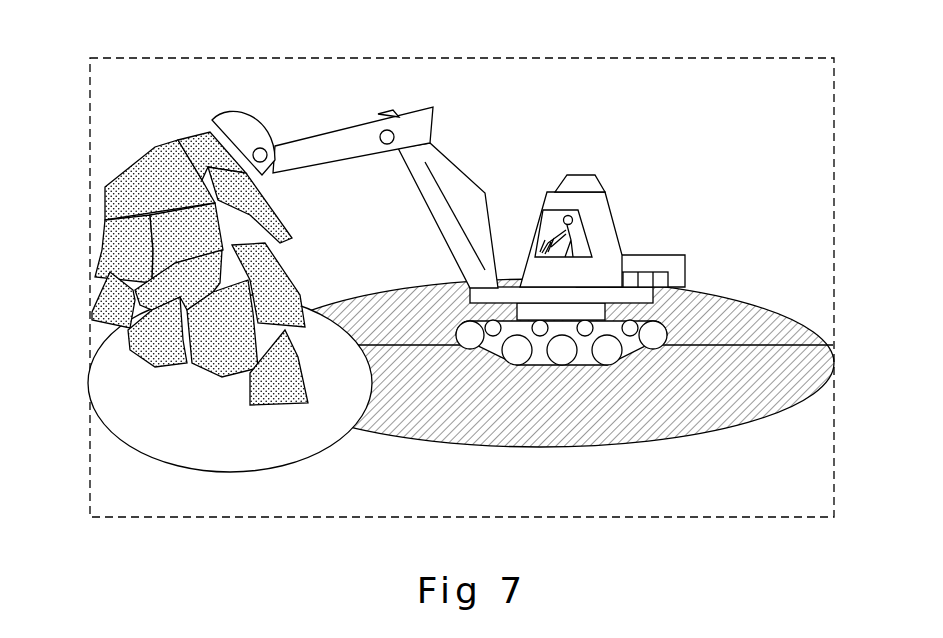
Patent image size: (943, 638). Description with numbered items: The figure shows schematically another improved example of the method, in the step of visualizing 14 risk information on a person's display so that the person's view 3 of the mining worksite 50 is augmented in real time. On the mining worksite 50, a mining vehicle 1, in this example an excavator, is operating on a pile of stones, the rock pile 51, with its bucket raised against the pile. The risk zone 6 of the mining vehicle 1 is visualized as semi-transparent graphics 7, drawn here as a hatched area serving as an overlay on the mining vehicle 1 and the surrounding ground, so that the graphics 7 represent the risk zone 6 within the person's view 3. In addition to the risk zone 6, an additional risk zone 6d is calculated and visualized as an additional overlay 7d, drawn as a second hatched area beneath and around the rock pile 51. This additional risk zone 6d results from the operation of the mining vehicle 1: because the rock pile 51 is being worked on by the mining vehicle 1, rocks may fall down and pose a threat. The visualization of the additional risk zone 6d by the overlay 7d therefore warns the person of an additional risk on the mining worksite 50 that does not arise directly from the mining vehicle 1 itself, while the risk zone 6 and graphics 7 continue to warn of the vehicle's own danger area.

The visualizing 14 is at (873, 30).
The person's view 3 is at (818, 172).
The mining worksite 50 is at (194, 121).
The rock pile 51 is at (116, 174).
The mining vehicle 1 is at (673, 273).
The risk zone 6 is at (747, 291).
The semi-transparent graphics 7 is at (673, 417).
The additional risk zone 6d is at (176, 481).
The additional overlay 7d is at (228, 450).